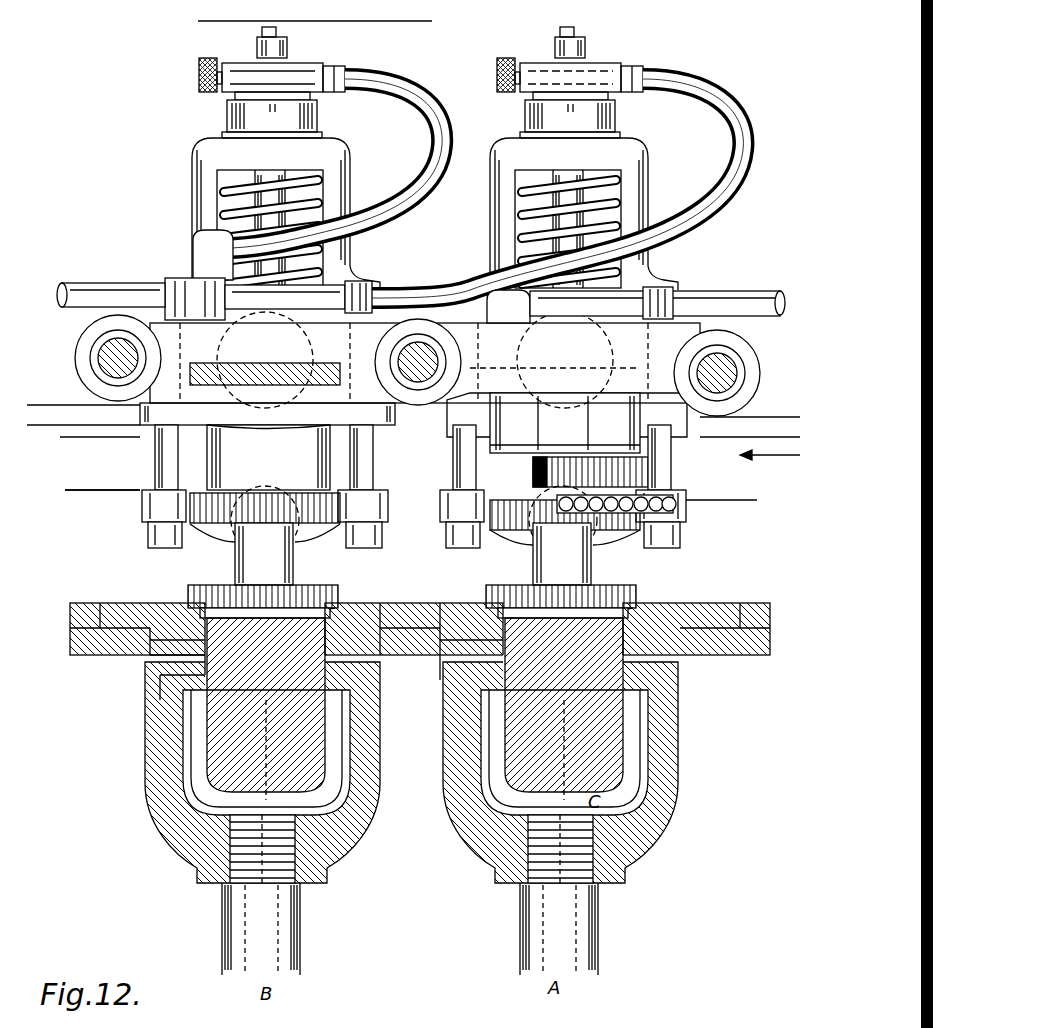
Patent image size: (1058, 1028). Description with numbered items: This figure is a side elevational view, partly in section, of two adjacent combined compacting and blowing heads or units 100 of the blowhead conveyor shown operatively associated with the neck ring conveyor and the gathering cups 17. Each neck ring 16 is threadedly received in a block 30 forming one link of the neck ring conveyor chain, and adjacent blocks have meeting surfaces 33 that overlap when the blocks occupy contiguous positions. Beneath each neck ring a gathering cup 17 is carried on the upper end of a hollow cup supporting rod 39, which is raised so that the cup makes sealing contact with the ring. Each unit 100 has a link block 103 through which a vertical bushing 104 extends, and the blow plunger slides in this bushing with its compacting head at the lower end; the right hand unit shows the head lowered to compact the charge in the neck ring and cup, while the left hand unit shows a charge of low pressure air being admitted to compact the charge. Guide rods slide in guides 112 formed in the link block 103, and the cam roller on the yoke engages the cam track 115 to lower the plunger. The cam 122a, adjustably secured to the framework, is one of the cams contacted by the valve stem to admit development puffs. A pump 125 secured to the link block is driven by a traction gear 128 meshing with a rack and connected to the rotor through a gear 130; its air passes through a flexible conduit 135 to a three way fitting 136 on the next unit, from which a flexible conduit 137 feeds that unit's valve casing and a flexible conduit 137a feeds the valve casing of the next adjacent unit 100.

The neck ring 16 is at (168, 612).
The gathering cup 17 is at (376, 843).
The block 30 is at (745, 612).
The meeting surfaces 33 is at (132, 648).
The cup supporting rod 39 is at (302, 932).
The combined compacting and blowing head 100 is at (384, 133).
The link block 103 is at (417, 364).
The bushing 104 is at (268, 457).
The guides 112 is at (160, 411).
The cam track 115 is at (118, 480).
The cam 122a is at (397, 22).
The pump 125 is at (567, 382).
The traction gear 128 is at (643, 509).
The gear 130 is at (629, 469).
The flexible conduit 135 is at (90, 288).
The three way fitting 136 is at (185, 268).
The flexible conduit 137 is at (428, 112).
The flexible conduit 137a is at (735, 145).